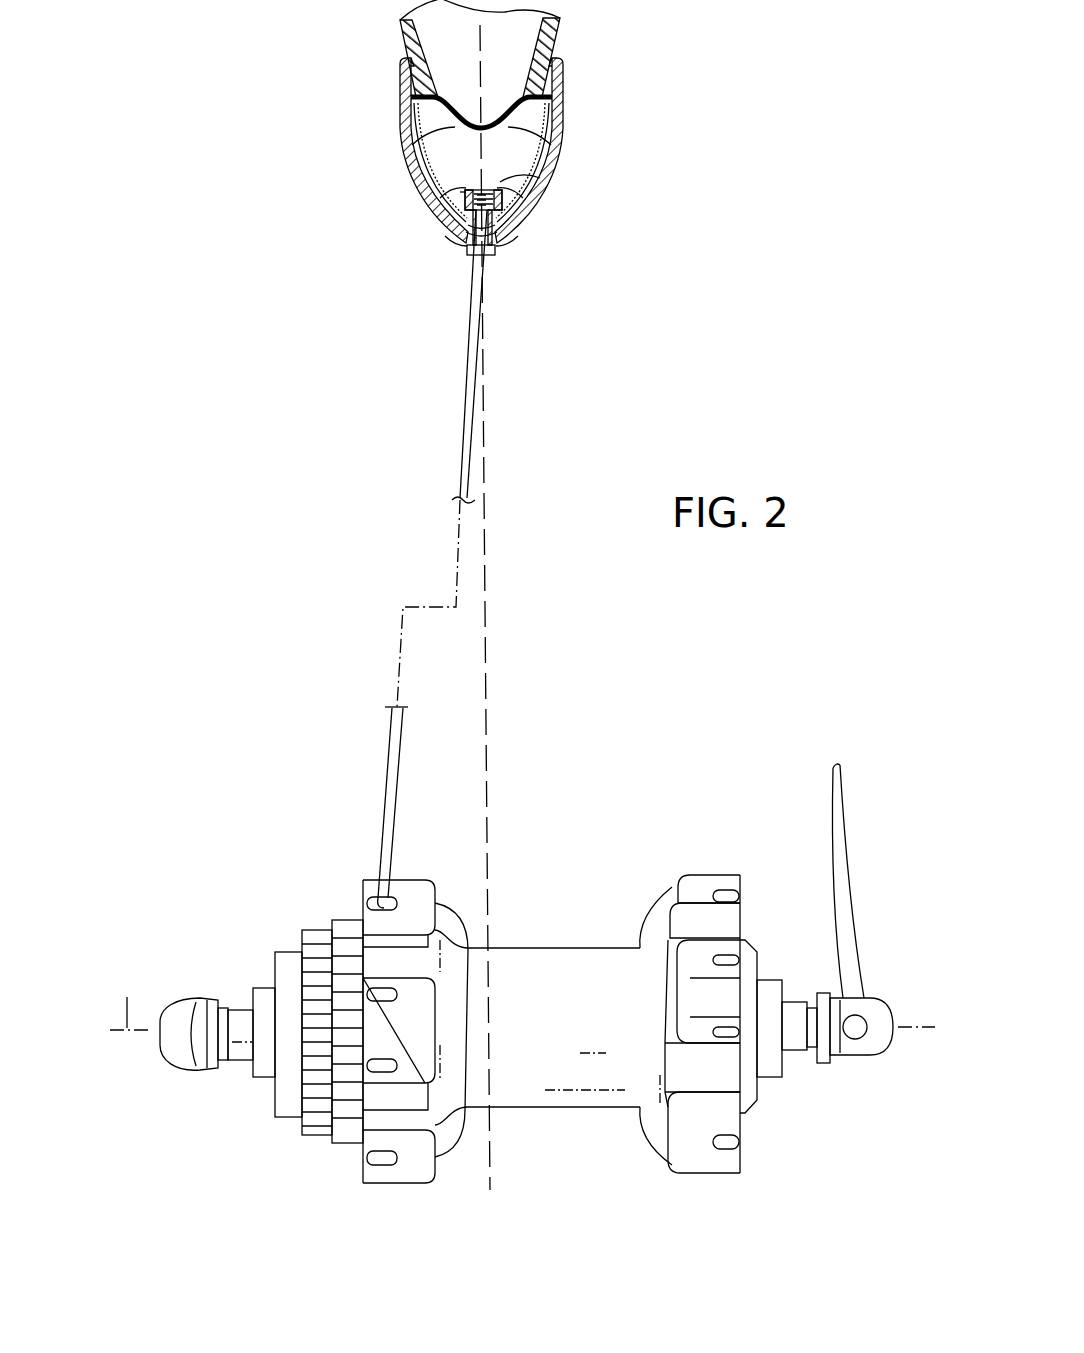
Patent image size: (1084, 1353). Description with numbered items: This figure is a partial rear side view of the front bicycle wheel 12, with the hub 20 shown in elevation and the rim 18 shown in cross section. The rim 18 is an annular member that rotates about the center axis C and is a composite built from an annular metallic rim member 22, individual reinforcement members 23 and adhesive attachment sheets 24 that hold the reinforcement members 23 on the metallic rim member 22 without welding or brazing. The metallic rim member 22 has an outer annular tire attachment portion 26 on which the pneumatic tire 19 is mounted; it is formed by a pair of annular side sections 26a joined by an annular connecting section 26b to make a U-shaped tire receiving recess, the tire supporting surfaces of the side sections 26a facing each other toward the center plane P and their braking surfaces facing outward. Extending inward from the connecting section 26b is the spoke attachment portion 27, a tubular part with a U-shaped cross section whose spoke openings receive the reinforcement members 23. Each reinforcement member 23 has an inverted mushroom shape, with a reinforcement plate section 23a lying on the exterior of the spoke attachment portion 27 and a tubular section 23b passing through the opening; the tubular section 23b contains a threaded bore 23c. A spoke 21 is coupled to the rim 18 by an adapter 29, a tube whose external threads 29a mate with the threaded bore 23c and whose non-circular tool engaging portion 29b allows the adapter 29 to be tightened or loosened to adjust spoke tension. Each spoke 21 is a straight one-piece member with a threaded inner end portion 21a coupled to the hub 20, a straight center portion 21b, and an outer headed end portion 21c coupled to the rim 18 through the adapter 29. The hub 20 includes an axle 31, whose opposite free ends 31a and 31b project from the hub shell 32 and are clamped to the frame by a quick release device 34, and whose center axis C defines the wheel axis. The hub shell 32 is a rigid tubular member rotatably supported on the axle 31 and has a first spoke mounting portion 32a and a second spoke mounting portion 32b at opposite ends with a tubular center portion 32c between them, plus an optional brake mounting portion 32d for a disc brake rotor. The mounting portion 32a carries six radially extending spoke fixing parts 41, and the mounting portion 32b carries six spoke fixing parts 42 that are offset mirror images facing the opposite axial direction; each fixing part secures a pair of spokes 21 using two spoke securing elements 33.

The front bicycle wheel 12 is at (730, 118).
The annular rim 18 is at (485, 155).
The pneumatic tire 19 is at (562, 28).
The center hub 20 is at (597, 838).
The spoke 21 is at (443, 550).
The threaded inner end portion 21a is at (383, 900).
The straight center portion 21b is at (460, 449).
The outer headed end portion 21c is at (503, 195).
The annular metallic rim member 22 is at (565, 125).
The reinforcement member 23 is at (503, 211).
The reinforcement plate section 23a is at (512, 236).
The tubular section 23b is at (503, 217).
The threaded bore 23c is at (460, 192).
The adhesive attachment sheet 24 is at (438, 230).
The annular tire attachment portion 26 is at (466, 113).
The annular side section 26a is at (401, 75).
The annular connecting section 26b is at (413, 158).
The spoke attachment portion 27 is at (432, 185).
The adapter 29 is at (459, 247).
The external threads 29a is at (455, 247).
The tool engaging portion 29b is at (458, 248).
The axle 31 is at (524, 1036).
The first free end of axle 31a is at (240, 1062).
The second free end of axle 31b is at (796, 1055).
The hub shell 32 is at (518, 1076).
The first spoke mounting portion 32a is at (384, 1058).
The second spoke mounting portion 32b is at (677, 1050).
The tubular center portion 32c is at (557, 1130).
The brake mounting portion 32d is at (322, 1148).
The spoke securing element 33 is at (362, 903).
The quick release device 34 is at (882, 992).
The spoke fixing part 41 is at (437, 1003).
The spoke fixing part 42 is at (695, 1127).
The center axis C is at (522, 1022).
The center plane P is at (488, 698).